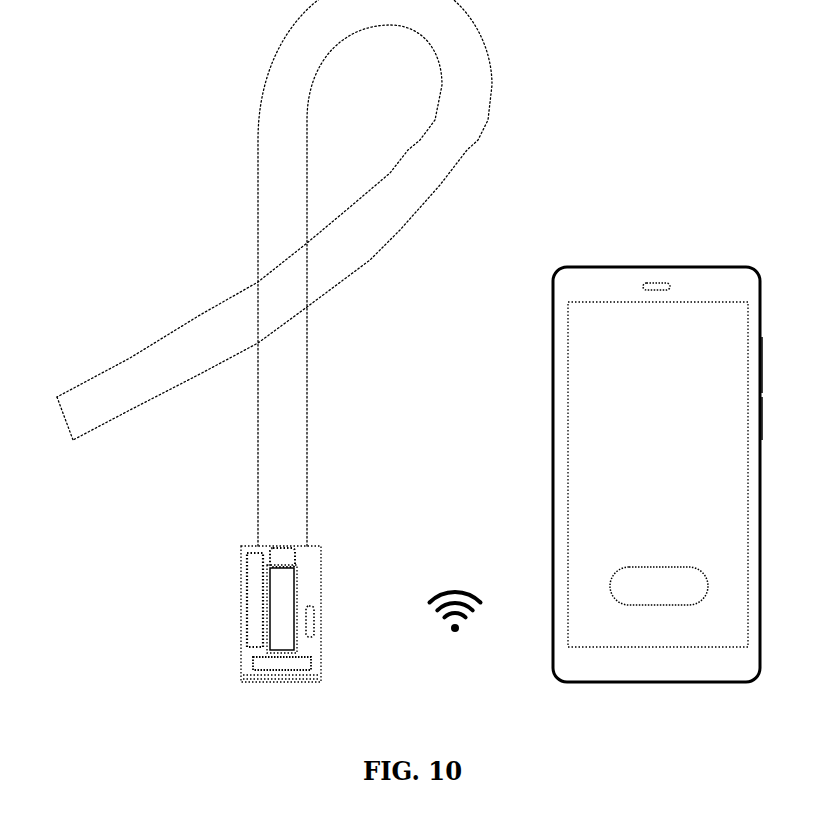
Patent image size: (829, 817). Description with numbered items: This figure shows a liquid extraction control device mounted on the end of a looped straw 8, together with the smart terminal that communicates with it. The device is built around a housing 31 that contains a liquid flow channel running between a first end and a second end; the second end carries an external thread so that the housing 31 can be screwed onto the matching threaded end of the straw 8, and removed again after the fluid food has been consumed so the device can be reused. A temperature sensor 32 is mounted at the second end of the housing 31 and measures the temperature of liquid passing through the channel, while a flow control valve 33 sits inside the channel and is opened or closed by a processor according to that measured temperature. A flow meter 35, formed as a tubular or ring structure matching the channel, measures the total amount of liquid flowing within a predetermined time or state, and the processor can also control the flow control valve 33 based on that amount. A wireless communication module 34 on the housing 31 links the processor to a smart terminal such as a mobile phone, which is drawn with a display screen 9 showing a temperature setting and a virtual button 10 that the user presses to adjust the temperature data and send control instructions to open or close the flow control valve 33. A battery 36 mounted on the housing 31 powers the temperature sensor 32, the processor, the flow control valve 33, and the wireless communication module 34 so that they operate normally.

The straw 8 is at (313, 372).
The display screen 9 is at (590, 412).
The virtual button 10 is at (600, 584).
The housing 31 is at (322, 560).
The temperature sensor 32 is at (318, 666).
The flow control valve 33 is at (290, 552).
The wireless communication module 34 is at (321, 619).
The flow meter 35 is at (305, 588).
The battery 36 is at (238, 580).